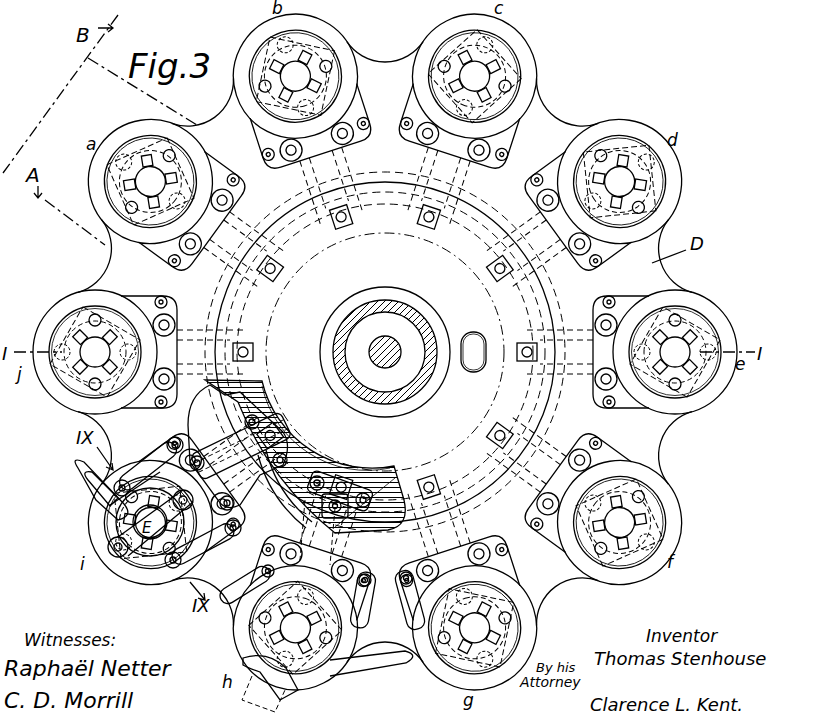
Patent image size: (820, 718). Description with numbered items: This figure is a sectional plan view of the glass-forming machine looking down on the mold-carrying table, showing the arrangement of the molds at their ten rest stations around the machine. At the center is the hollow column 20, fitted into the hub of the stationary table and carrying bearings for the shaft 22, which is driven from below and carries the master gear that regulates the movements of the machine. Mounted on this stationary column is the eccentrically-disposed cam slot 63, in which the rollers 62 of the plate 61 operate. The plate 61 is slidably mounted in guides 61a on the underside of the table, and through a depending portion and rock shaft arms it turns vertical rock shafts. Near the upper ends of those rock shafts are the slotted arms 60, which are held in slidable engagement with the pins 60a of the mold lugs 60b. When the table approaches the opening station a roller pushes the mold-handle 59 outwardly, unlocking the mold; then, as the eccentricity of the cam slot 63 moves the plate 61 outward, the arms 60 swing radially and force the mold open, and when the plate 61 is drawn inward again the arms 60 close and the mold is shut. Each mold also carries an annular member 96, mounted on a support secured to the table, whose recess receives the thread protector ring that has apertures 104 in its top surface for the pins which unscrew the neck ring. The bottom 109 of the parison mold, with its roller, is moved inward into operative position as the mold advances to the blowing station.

The hollow column 20 is at (402, 308).
The shaft 22 is at (386, 352).
The mold-handle 59 is at (87, 480).
The arms 60 is at (208, 180).
The pins 60a is at (112, 470).
The mold lugs 60b is at (110, 512).
The plate 61 is at (322, 523).
The guides 61a is at (216, 444).
The rollers 62 is at (430, 220).
The cam slot 63 is at (343, 517).
The annular member 96 is at (105, 236).
The apertures 104 is at (126, 188).
The bottom of the mold 109 is at (245, 658).